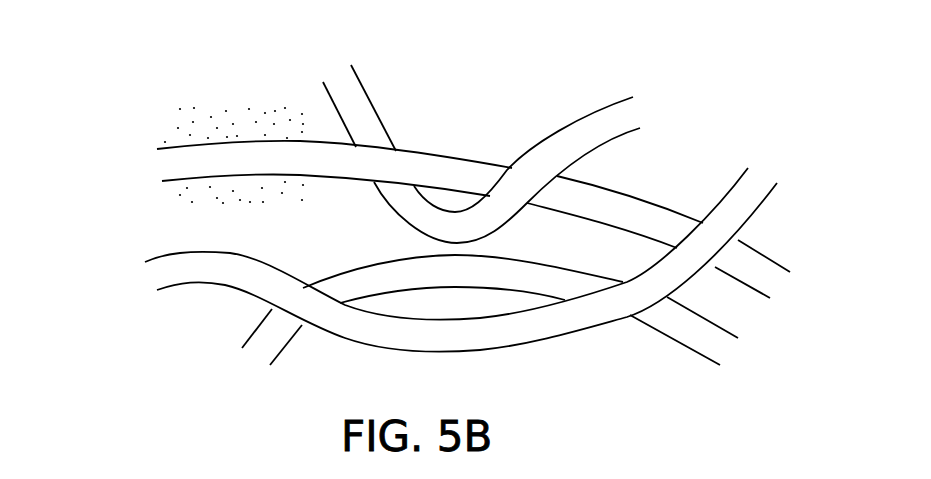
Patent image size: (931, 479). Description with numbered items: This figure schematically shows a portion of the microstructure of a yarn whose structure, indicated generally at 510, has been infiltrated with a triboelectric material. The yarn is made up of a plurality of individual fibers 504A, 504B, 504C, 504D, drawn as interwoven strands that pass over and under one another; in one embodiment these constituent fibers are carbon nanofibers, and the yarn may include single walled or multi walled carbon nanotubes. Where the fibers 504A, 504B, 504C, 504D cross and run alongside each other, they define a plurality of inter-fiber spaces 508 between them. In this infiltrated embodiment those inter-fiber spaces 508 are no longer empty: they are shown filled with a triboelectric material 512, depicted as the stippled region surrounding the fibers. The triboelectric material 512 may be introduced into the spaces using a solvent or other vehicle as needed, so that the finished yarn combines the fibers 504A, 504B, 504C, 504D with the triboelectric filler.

The individual fiber 504A is at (337, 101).
The individual fiber 504B is at (165, 182).
The individual fiber 504C is at (172, 253).
The individual fiber 504D is at (255, 332).
The inter-fiber space 508 is at (741, 309).
The woven fiber structure 510 is at (122, 83).
The triboelectric material 512 is at (710, 126).